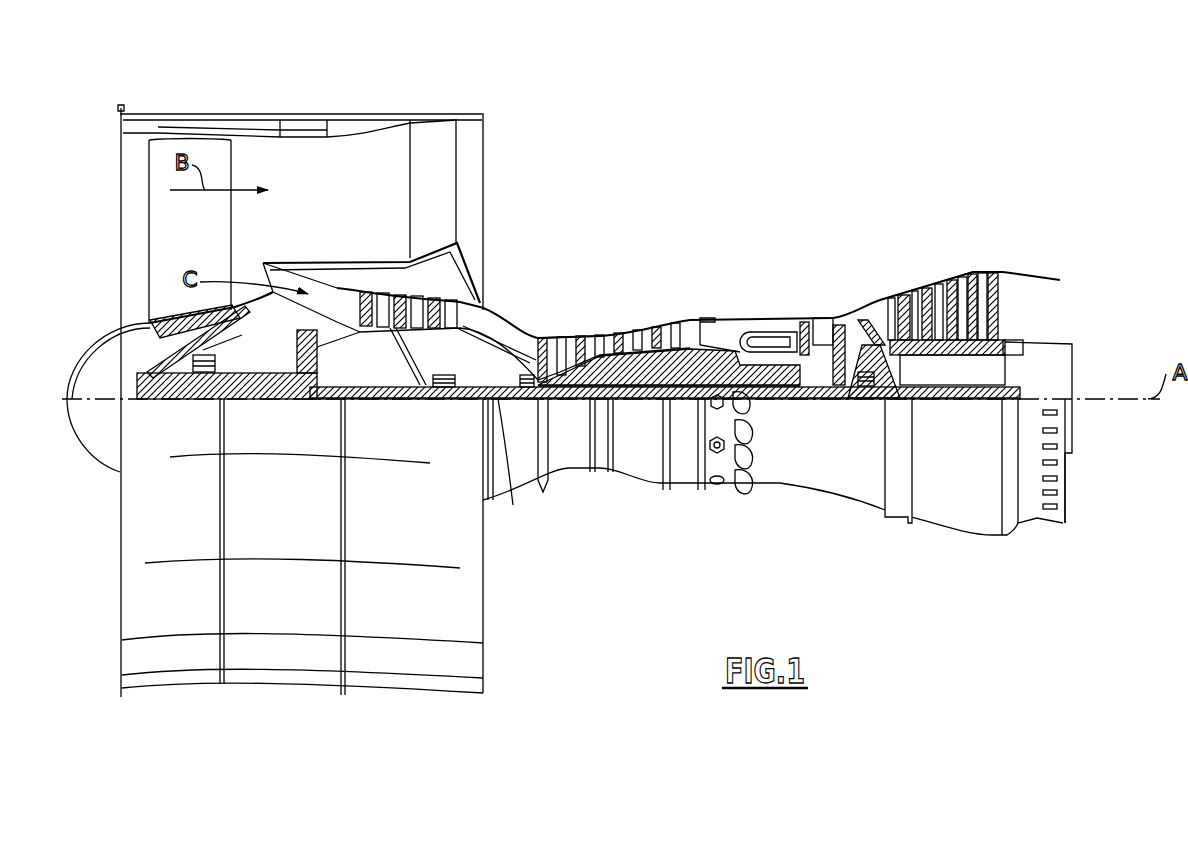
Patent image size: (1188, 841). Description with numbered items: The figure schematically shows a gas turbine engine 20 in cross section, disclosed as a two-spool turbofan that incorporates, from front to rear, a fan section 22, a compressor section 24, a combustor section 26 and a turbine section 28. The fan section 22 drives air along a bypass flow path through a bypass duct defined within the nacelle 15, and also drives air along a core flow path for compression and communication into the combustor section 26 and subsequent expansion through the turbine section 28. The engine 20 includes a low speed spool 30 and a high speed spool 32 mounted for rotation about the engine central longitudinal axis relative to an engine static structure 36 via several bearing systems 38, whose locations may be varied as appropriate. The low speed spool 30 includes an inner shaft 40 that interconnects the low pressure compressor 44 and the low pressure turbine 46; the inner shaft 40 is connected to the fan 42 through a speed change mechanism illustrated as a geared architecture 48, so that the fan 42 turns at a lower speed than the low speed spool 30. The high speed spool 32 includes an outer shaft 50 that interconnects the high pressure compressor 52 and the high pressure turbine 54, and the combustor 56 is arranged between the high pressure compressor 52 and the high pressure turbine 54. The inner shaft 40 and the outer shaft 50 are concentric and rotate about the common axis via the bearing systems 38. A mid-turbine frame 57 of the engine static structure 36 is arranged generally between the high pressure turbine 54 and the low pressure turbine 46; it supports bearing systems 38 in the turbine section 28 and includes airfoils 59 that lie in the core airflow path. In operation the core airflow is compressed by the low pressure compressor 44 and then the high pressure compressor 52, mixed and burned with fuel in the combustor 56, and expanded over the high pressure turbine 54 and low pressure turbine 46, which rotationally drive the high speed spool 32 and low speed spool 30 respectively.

The nacelle 15 is at (305, 120).
The gas turbine engine 20 is at (766, 164).
The fan section 22 is at (231, 106).
The compressor section 24 is at (534, 303).
The combustor section 26 is at (758, 296).
The turbine section 28 is at (904, 258).
The low speed spool 30 is at (642, 404).
The high speed spool 32 is at (687, 347).
The engine static structure 36 is at (682, 489).
The bearing systems 38 is at (443, 397).
The inner shaft 40 is at (512, 485).
The fan 42 is at (206, 242).
The low pressure compressor 44 is at (407, 305).
The low pressure turbine 46 is at (950, 290).
The geared architecture 48 is at (310, 382).
The outer shaft 50 is at (765, 399).
The high pressure compressor 52 is at (603, 333).
The high pressure turbine 54 is at (820, 317).
The combustor 56 is at (755, 340).
The mid-turbine frame 57 is at (869, 308).
The airfoils 59 is at (900, 370).